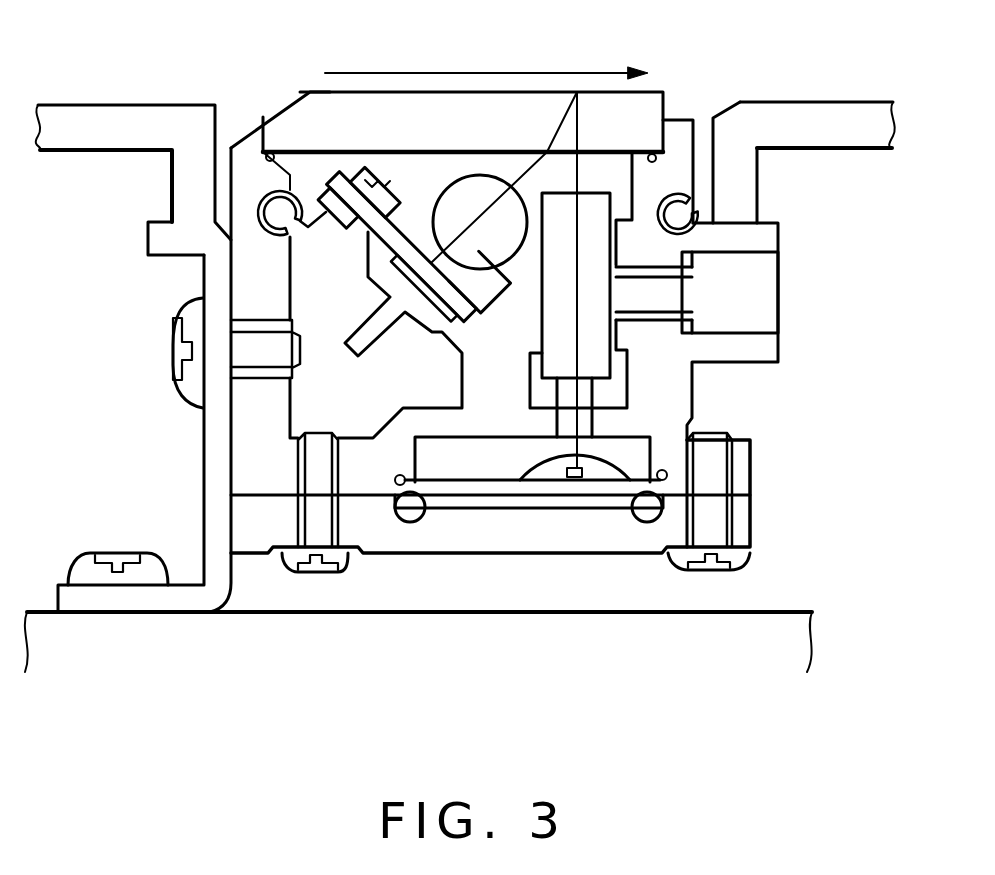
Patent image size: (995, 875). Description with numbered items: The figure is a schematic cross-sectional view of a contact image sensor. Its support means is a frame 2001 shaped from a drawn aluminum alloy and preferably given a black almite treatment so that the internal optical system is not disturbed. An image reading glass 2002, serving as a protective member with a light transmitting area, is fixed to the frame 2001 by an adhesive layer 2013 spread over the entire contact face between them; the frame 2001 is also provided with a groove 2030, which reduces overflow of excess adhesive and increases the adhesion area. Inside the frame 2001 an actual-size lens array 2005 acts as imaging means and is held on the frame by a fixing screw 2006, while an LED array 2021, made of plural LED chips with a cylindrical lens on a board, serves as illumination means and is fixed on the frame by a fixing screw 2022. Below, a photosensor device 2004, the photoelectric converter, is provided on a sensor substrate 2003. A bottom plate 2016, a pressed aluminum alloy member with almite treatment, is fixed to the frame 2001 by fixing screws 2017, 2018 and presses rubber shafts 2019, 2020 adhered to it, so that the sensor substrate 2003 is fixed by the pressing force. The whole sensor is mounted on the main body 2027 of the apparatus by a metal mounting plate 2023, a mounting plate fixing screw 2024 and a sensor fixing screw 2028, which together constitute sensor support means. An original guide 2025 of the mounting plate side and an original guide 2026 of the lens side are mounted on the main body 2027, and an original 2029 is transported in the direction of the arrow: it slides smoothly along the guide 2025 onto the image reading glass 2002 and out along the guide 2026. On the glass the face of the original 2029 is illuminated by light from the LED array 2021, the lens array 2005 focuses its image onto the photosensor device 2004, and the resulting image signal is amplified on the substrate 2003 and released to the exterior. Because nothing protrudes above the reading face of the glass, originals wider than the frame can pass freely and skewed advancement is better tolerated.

The frame 2001 is at (680, 133).
The image reading glass 2002 is at (285, 120).
The sensor substrate 2003 is at (470, 488).
The photosensor device 2004 is at (573, 477).
The lens array 2005 is at (550, 308).
The fixing screw 2006 is at (685, 297).
The adhesive layer 2013 is at (305, 92).
The bottom plate 2016 is at (245, 545).
The fixing screw 2017 is at (292, 557).
The fixing screw 2018 is at (687, 555).
The rubber shaft 2019 is at (405, 515).
The rubber shaft 2020 is at (645, 512).
The LED array 2021 is at (433, 193).
The fixing screw 2022 is at (367, 170).
The metal mounting plate 2023 is at (160, 233).
The mounting plate fixing screw 2024 is at (193, 308).
The original guide of the mounting plate side 2025 is at (115, 112).
The original guide of the lens side 2026 is at (817, 120).
The main body of the apparatus 2027 is at (768, 628).
The sensor fixing screw 2028 is at (142, 572).
The original 2029 is at (558, 72).
The groove 2030 is at (268, 160).